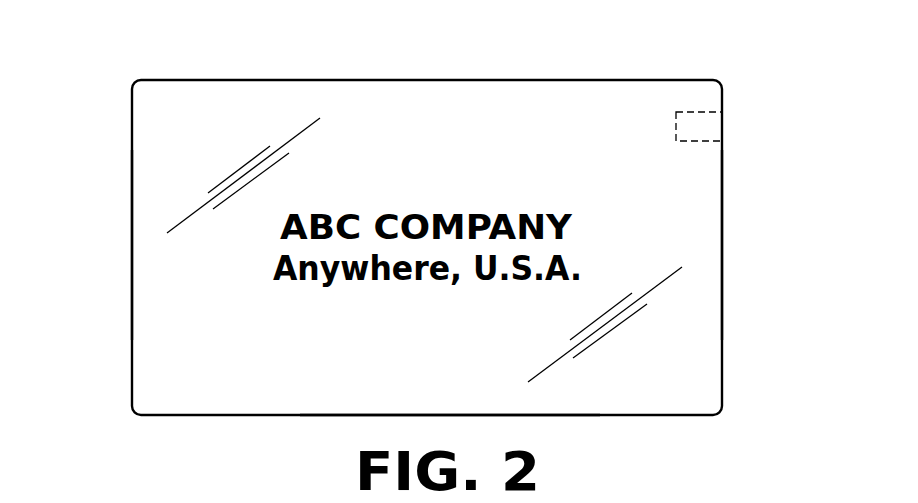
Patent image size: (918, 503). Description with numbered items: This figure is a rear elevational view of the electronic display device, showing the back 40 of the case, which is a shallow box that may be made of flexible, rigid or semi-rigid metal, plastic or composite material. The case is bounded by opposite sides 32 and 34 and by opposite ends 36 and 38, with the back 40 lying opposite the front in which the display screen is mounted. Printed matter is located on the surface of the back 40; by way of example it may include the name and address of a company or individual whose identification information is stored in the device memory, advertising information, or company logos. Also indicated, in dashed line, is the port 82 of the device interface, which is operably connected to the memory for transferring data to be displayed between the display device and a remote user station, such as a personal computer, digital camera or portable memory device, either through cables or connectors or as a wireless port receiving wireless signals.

The side 32 is at (566, 80).
The side 34 is at (602, 415).
The end 36 is at (722, 318).
The end 38 is at (132, 243).
The back 40 is at (328, 98).
The port 82 is at (703, 132).